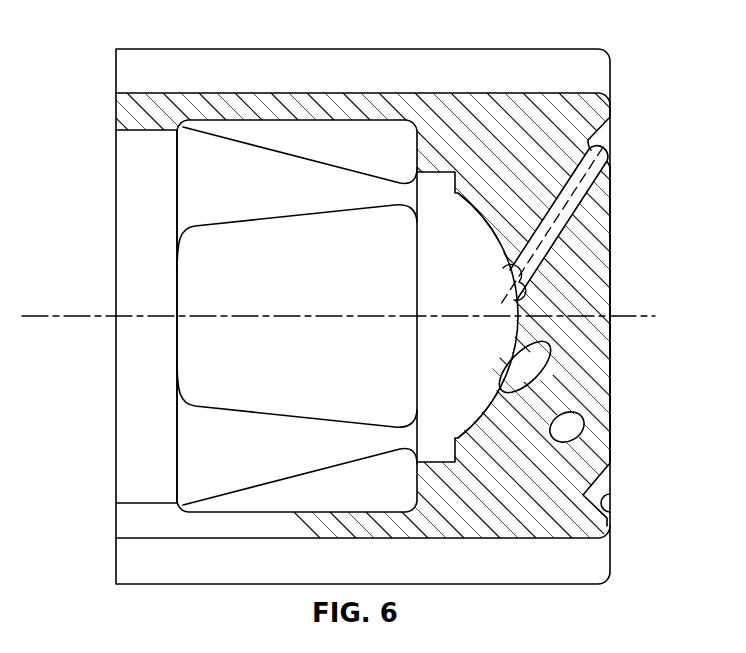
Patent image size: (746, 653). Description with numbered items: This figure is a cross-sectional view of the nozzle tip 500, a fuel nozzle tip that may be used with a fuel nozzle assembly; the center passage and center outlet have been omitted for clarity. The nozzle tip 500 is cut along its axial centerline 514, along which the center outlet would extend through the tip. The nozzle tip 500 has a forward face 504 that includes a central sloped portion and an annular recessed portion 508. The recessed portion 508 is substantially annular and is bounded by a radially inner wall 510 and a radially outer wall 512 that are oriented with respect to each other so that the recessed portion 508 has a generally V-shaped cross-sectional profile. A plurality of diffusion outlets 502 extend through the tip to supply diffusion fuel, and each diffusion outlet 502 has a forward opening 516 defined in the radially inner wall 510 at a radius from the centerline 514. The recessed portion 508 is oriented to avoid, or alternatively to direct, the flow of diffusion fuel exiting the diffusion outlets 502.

The nozzle tip 500 is at (373, 301).
The diffusion outlets 502 is at (568, 226).
The forward face 504 is at (611, 360).
The annular recessed portion 508 is at (625, 142).
The radially inner wall 510 is at (611, 468).
The radially outer wall 512 is at (612, 509).
The axial centerline 514 is at (656, 316).
The forward opening 516 is at (611, 132).